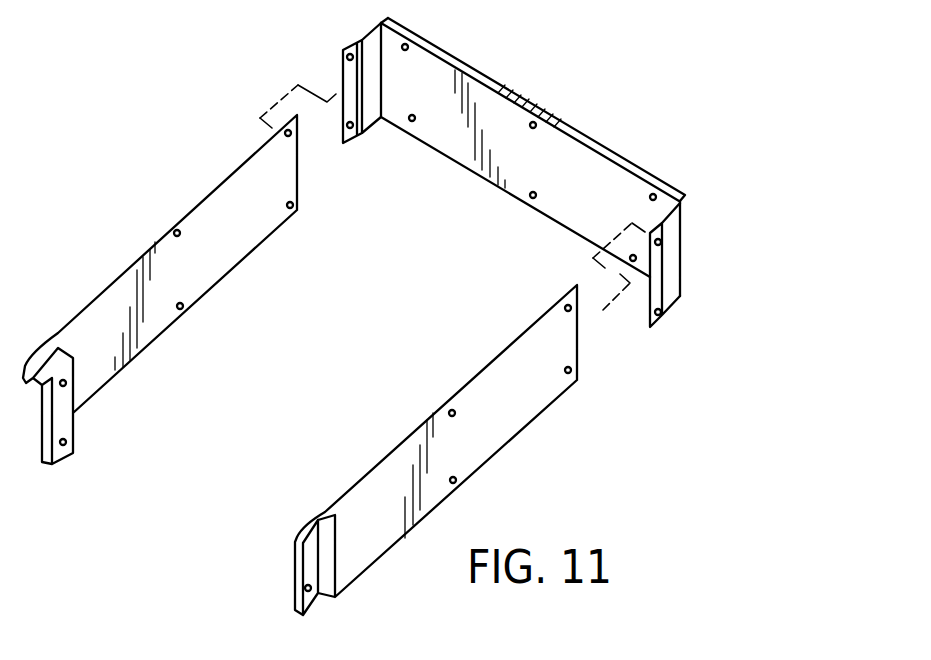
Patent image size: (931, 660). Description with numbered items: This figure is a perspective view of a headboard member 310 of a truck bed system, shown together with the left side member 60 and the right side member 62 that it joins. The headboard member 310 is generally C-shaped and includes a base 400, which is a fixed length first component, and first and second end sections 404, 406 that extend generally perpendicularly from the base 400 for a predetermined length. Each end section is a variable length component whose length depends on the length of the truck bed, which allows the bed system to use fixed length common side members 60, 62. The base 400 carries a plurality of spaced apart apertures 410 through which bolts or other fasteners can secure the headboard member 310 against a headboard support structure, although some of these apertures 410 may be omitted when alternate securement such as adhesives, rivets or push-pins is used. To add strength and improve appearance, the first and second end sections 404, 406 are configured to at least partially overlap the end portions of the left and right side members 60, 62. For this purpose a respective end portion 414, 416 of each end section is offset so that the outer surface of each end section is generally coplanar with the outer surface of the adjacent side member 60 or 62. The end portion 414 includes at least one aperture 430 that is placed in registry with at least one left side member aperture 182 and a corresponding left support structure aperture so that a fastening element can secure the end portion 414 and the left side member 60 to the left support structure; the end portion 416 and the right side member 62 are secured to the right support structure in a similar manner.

The left side member 60 is at (147, 235).
The right side member 62 is at (496, 460).
The left side member aperture 182 is at (179, 230).
The headboard member 310 is at (610, 144).
The base 400 is at (458, 140).
The first end section 404 is at (372, 35).
The second end section 406 is at (673, 288).
The apertures 410 is at (536, 122).
The end portion 414 is at (344, 111).
The end portion 416 is at (653, 293).
The aperture 430 is at (357, 66).